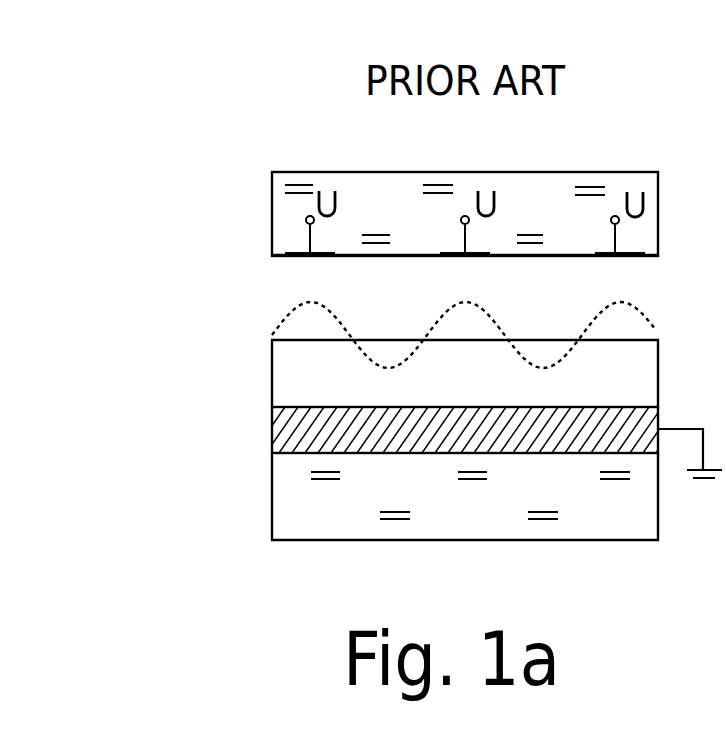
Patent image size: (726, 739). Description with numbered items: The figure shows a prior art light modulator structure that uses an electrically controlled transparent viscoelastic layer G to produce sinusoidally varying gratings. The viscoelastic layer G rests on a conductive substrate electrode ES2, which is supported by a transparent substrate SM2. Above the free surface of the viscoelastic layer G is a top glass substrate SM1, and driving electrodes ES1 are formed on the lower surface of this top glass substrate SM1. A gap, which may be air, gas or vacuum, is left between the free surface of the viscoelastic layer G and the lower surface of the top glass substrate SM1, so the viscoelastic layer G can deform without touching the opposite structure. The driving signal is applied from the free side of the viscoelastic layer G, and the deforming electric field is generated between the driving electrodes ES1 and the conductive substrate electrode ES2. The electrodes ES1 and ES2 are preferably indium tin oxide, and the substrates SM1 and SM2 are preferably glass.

The top glass substrate SM1 is at (310, 193).
The driving electrodes ES1 is at (301, 257).
The viscoelastic layer G is at (295, 374).
The conductive substrate electrode ES2 is at (295, 433).
The transparent substrate SM2 is at (290, 510).